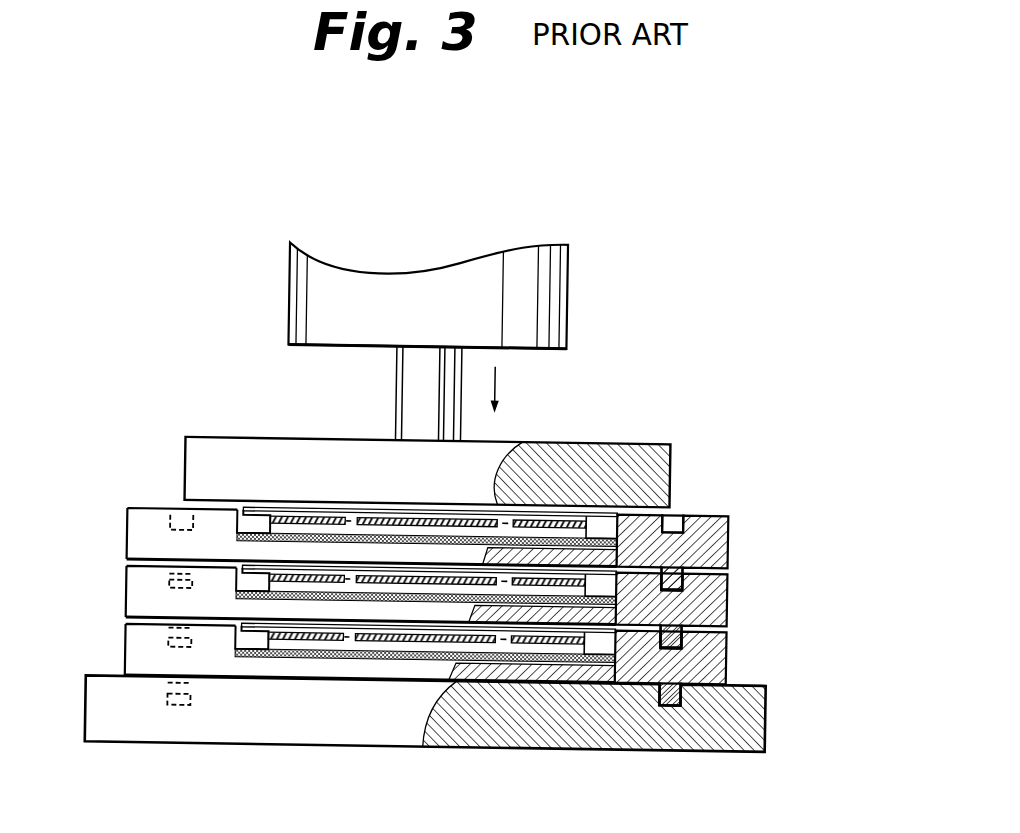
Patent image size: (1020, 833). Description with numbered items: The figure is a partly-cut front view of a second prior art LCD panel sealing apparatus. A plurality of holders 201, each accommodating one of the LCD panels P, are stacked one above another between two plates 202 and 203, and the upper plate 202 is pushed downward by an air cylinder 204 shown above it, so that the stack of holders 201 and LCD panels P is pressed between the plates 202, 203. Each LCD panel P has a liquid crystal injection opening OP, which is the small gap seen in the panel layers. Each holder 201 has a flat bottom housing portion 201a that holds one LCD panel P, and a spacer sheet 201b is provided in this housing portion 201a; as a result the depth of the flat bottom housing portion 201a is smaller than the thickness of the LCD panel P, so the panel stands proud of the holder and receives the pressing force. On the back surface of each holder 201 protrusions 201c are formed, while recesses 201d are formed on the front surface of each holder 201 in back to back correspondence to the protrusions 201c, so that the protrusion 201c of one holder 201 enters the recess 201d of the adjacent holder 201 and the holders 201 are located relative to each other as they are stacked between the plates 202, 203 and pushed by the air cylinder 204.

The holder 201 is at (727, 524).
The flat bottom housing portion 201a is at (236, 531).
The spacer sheet 201b is at (248, 666).
The protrusion 201c is at (671, 562).
The recess 201d is at (177, 512).
The plate 202 is at (673, 471).
The plate 203 is at (698, 748).
The air cylinder 204 is at (539, 309).
The LCD panel P is at (269, 518).
The liquid crystal injection opening OP is at (349, 519).